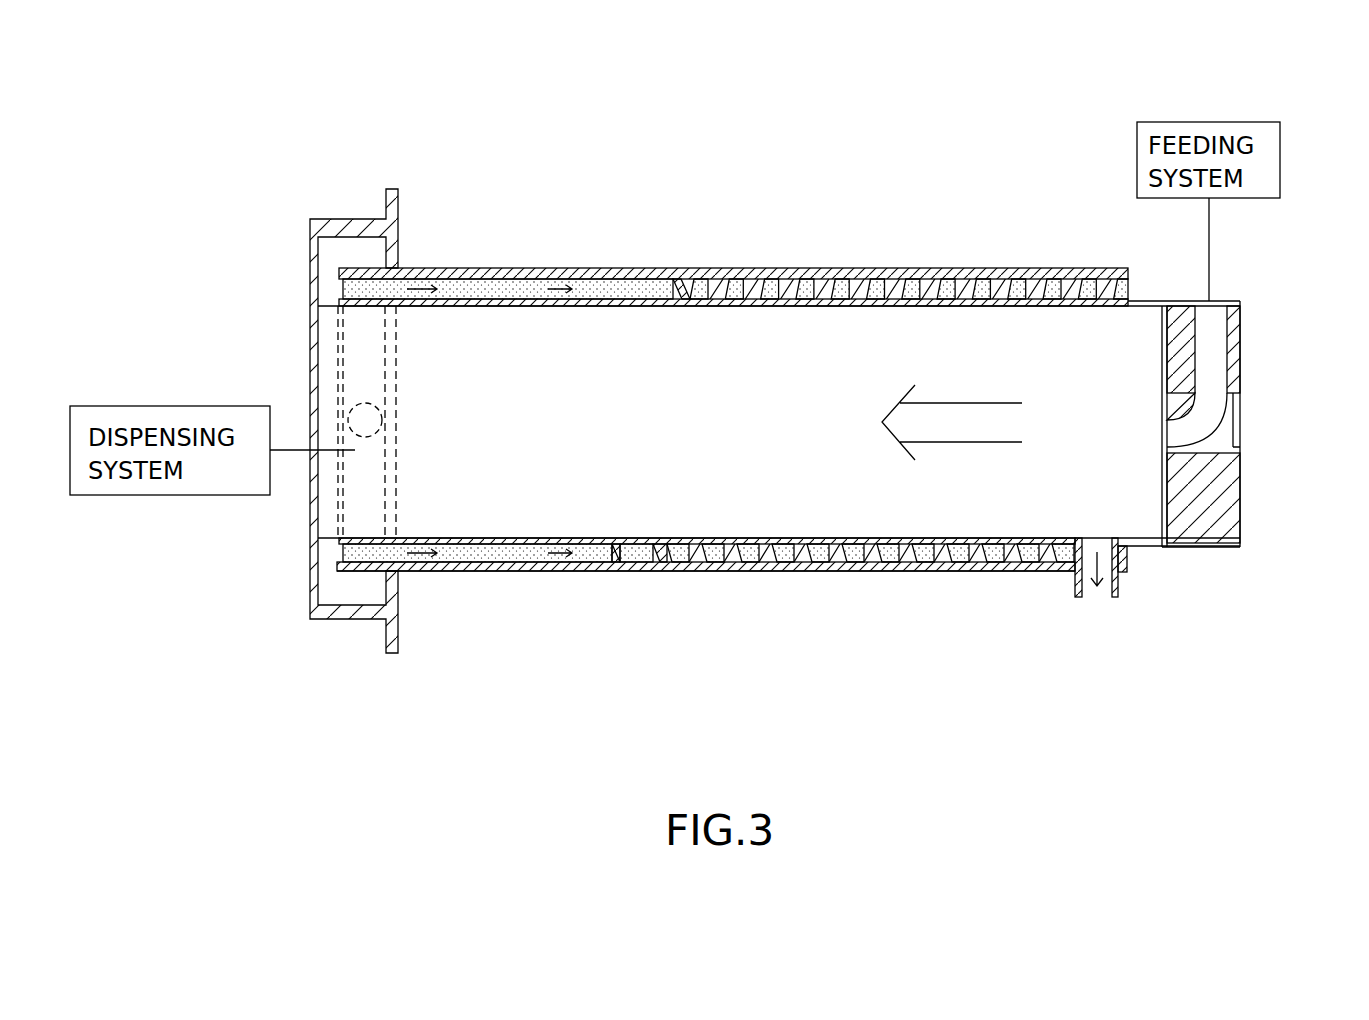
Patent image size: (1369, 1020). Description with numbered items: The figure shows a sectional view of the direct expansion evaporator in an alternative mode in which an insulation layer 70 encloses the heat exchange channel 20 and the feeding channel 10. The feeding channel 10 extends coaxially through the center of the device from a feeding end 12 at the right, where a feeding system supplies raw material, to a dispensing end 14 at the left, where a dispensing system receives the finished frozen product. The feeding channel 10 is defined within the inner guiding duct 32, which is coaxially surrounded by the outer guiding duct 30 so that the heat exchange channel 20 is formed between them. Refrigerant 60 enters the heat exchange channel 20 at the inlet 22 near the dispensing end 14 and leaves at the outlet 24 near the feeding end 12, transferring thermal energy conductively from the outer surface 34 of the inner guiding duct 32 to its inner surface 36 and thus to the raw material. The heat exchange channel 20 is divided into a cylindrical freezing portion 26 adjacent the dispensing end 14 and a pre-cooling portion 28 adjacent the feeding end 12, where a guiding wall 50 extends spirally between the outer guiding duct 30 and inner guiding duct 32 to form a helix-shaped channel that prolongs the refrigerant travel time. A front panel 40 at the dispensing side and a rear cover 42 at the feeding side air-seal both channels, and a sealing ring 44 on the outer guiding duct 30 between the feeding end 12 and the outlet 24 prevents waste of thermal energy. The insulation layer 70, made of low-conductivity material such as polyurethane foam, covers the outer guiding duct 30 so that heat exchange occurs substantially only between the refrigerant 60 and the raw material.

The feeding channel 10 is at (1302, 222).
The feeding end 12 is at (1220, 297).
The dispensing end 14 is at (358, 497).
The heat exchange channel 20 is at (928, 197).
The inlet 22 is at (350, 410).
The outlet 24 is at (1080, 608).
The freezing portion 26 is at (667, 268).
The pre-cooling portion 28 is at (1115, 268).
The outer guiding duct 30 is at (455, 570).
The inner guiding duct 32 is at (622, 562).
The outer surface 34 is at (530, 565).
The inner surface 36 is at (505, 536).
The front panel 40 is at (363, 596).
The rear cover 42 is at (1210, 492).
The sealing ring 44 is at (1128, 562).
The guiding wall 50 is at (768, 557).
The refrigerant 60 is at (592, 555).
The insulation layer 70 is at (1003, 572).